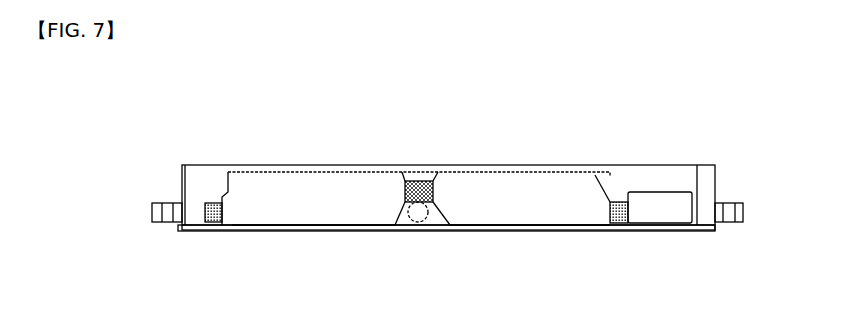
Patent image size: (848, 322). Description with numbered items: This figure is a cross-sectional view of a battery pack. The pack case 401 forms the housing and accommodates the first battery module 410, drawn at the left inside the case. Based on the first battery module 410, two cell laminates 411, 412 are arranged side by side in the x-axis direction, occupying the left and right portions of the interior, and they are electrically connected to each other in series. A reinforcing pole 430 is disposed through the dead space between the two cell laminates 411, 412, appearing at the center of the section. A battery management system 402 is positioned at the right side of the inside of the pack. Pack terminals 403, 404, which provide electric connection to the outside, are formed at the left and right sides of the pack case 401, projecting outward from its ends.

The pack case 401 is at (475, 167).
The battery management system (BMS) 402 is at (658, 192).
The pack terminal 403 is at (162, 222).
The pack terminal 404 is at (733, 222).
The first battery module 410 is at (208, 178).
The cell laminate 411 is at (272, 221).
The cell laminate 412 is at (553, 222).
The reinforcing pole 430 is at (408, 220).